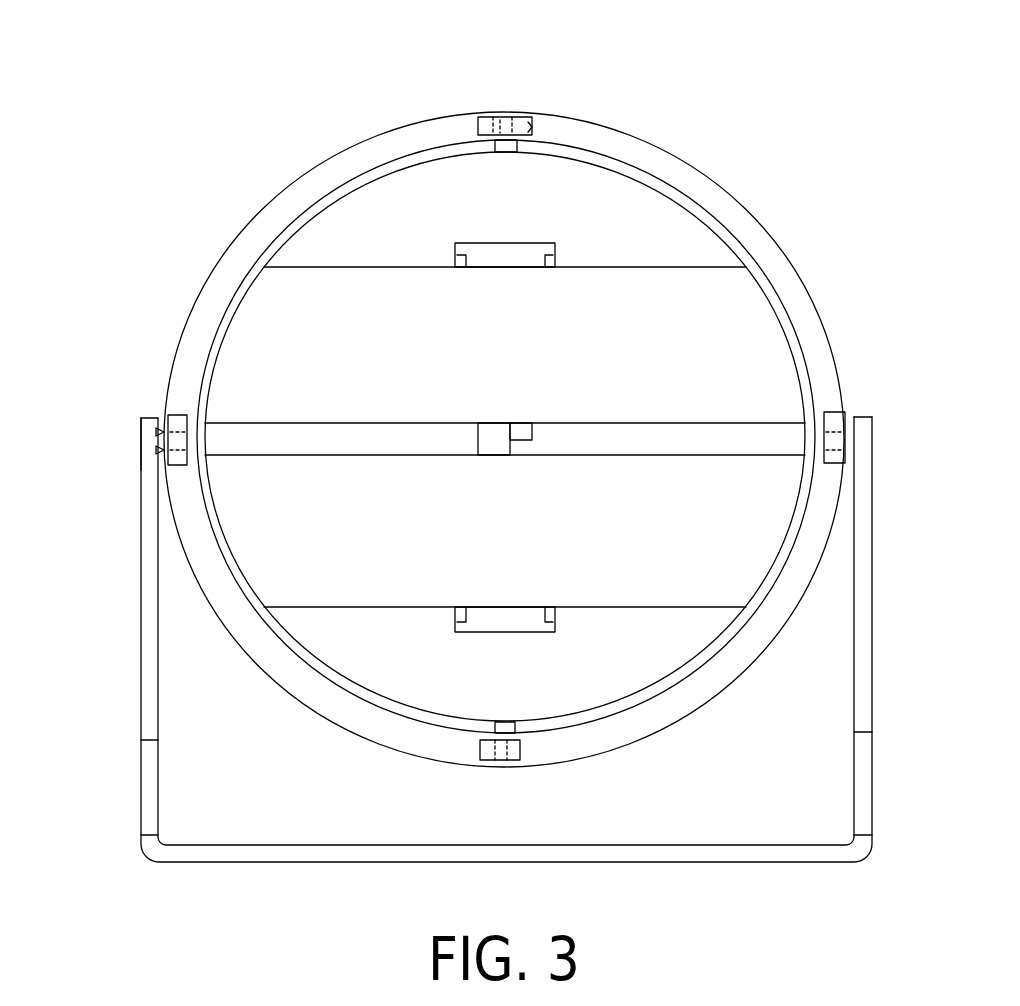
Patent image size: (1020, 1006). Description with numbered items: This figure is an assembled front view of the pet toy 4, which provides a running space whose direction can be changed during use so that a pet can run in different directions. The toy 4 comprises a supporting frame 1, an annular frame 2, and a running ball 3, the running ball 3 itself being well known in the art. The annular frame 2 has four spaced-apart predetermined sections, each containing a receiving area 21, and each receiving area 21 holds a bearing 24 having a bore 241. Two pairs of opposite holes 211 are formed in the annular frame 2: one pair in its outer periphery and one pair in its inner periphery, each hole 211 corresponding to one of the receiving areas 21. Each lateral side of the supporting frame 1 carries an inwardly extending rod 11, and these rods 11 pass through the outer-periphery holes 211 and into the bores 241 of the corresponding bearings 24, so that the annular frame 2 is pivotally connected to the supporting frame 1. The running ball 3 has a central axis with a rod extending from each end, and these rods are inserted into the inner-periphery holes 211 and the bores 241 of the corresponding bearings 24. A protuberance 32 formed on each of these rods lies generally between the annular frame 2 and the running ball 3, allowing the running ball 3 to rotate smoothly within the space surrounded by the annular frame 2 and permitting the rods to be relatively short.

The supporting frame 1 is at (267, 853).
The annular frame 2 is at (727, 205).
The running ball 3 is at (712, 350).
The toy 4 is at (515, 407).
The rod 11 is at (158, 432).
The receiving area 21 is at (478, 120).
The bearing 24 is at (487, 117).
The hole 211 is at (532, 127).
The bore 241 is at (505, 117).
The protuberance 32 is at (517, 146).